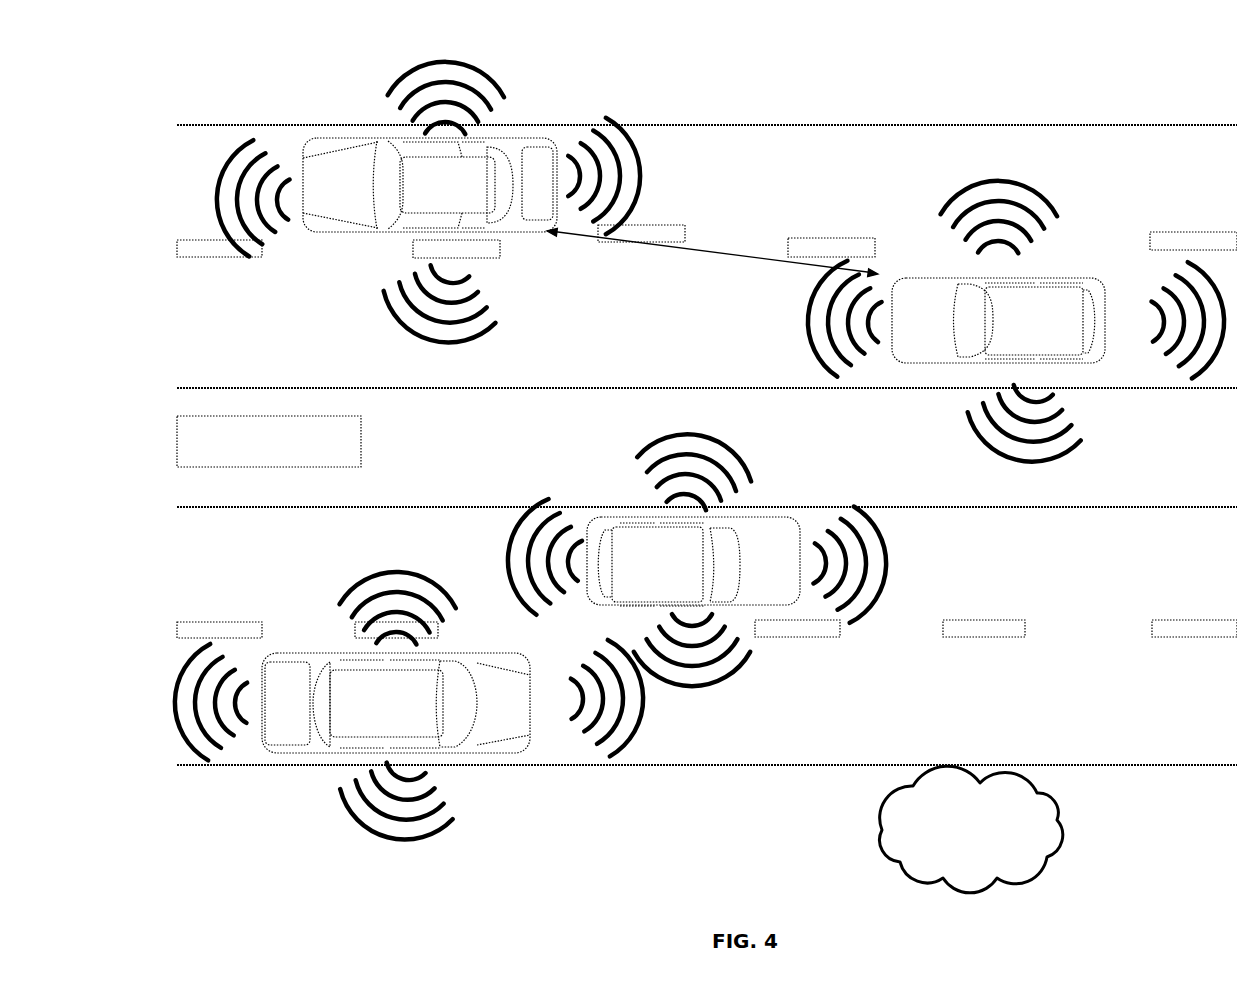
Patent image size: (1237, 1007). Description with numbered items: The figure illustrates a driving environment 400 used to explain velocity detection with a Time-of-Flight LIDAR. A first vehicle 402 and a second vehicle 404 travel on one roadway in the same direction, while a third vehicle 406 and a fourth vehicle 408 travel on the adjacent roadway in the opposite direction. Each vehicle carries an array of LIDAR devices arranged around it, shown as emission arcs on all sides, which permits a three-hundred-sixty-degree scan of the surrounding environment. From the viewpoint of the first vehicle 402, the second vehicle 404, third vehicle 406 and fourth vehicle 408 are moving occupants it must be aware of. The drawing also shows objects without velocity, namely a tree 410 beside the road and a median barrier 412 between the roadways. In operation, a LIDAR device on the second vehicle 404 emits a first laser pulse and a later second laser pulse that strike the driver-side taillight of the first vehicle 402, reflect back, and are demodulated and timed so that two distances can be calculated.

The driving environment 400 is at (210, 68).
The first vehicle 402 is at (320, 138).
The second vehicle 404 is at (920, 355).
The third vehicle 406 is at (770, 536).
The fourth vehicle 408 is at (507, 757).
The tree 410 is at (971, 829).
The median barrier 412 is at (269, 441).